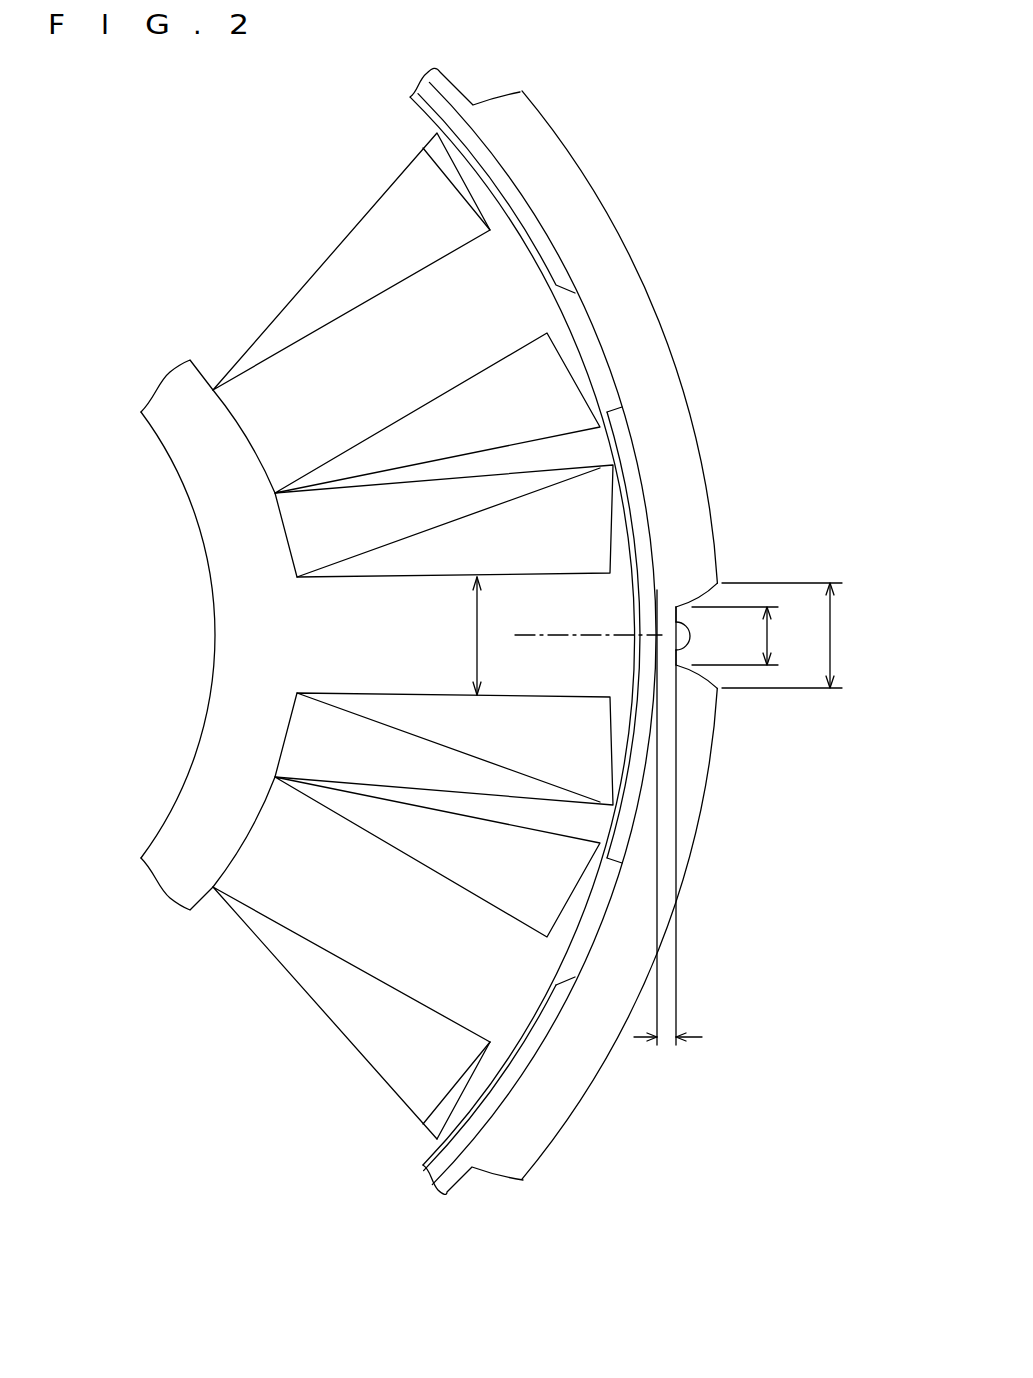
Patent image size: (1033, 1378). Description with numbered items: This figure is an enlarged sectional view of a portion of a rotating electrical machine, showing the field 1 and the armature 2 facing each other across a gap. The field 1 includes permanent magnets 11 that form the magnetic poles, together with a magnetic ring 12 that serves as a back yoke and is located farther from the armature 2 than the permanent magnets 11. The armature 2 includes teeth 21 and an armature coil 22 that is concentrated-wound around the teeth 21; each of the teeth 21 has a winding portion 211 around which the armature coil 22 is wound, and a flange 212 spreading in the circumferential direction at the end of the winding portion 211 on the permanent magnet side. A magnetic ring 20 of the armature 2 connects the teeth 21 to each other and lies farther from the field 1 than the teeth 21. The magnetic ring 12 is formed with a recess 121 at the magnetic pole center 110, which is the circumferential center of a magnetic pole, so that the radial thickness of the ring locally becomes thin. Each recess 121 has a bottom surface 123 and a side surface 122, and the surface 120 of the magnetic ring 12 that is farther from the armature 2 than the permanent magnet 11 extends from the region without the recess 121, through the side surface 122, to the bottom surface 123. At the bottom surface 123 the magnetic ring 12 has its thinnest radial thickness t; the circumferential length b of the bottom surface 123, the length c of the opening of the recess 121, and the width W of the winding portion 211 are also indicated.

The field 1 is at (752, 330).
The permanent magnet 11 is at (621, 420).
The magnetic ring 12 is at (655, 352).
The magnetic pole center 110 is at (603, 634).
The surface 120 is at (702, 452).
The recess 121 is at (737, 704).
The side surface 122 is at (710, 587).
The bottom surface 123 is at (676, 646).
The armature 2 is at (118, 995).
The magnetic ring 20 is at (186, 890).
The teeth 21 is at (227, 1055).
The winding portion 211 is at (403, 939).
The flange 212 is at (450, 1088).
The armature coil 22 is at (287, 957).